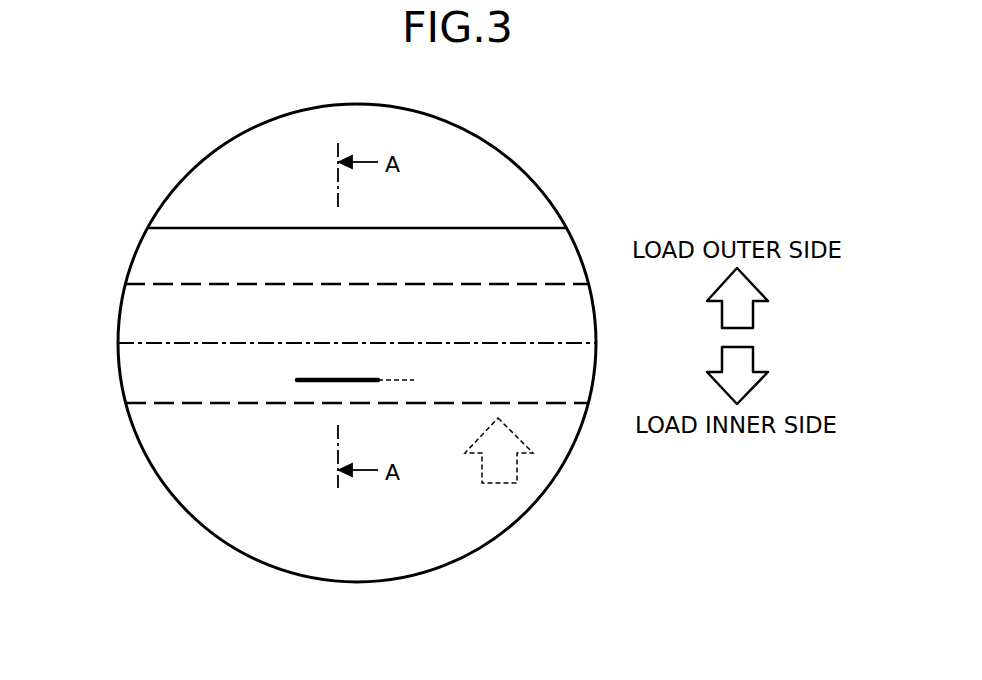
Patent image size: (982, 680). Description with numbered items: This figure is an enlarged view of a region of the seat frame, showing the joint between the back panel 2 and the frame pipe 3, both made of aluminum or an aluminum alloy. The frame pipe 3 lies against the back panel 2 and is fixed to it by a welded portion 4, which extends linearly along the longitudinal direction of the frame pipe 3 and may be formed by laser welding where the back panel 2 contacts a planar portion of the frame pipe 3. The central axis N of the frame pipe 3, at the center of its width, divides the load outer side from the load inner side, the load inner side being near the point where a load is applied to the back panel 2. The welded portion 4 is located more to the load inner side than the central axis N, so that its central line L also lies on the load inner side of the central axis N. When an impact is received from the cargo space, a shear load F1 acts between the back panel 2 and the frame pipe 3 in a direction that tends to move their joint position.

The back panel 2 is at (447, 245).
The frame pipe 3 is at (275, 283).
The welded portion 4 is at (320, 384).
The central line L is at (297, 380).
The central axis N is at (540, 344).
The shear load F1 is at (517, 466).